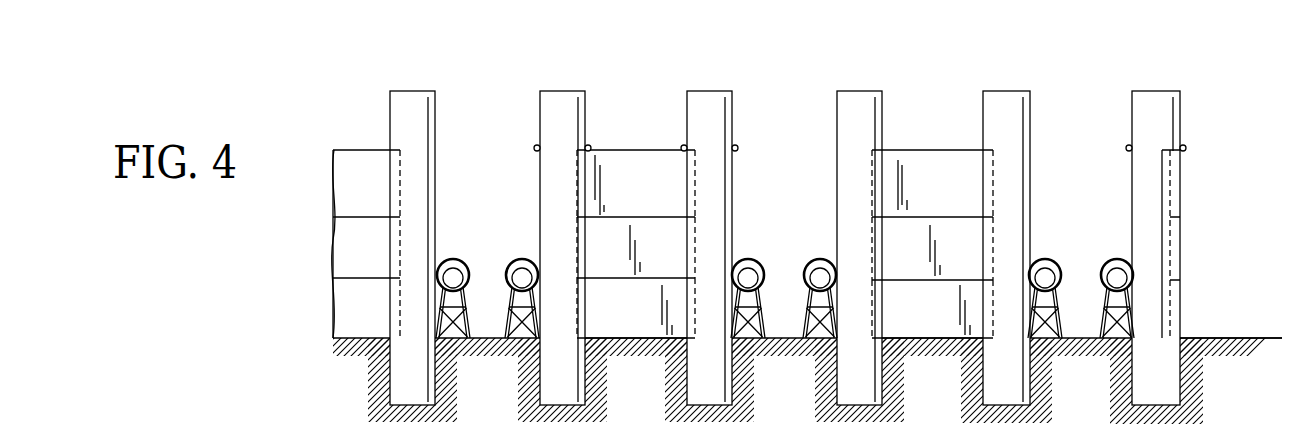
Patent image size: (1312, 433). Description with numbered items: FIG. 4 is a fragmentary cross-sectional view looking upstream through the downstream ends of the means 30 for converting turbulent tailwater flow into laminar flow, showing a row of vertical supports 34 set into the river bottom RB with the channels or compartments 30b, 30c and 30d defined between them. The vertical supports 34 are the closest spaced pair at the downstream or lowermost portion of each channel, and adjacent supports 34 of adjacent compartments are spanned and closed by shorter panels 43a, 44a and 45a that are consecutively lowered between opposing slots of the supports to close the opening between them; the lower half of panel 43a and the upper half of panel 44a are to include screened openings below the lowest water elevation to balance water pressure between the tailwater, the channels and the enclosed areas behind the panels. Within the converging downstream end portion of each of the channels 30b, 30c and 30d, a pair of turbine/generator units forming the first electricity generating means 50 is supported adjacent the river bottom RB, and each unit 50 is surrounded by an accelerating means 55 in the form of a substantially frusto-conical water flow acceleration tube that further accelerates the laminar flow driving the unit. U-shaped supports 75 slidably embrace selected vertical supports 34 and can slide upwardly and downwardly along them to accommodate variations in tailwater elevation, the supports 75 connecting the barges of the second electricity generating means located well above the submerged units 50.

The means for converting turbulent tailwater flow into laminar flow 30 is at (917, 62).
The channel or compartment 30b is at (485, 83).
The channel or compartment 30c is at (784, 103).
The channel or compartment 30d is at (1081, 103).
The vertical support 34 is at (537, 392).
The shorter panel 43a is at (636, 318).
The shorter panel 44a is at (678, 253).
The shorter panel 45a is at (660, 187).
The first electricity generating means 50 is at (834, 181).
The accelerating means 55 is at (981, 185).
The U-shaped support 75 is at (533, 147).
The river bottom RB is at (1235, 337).